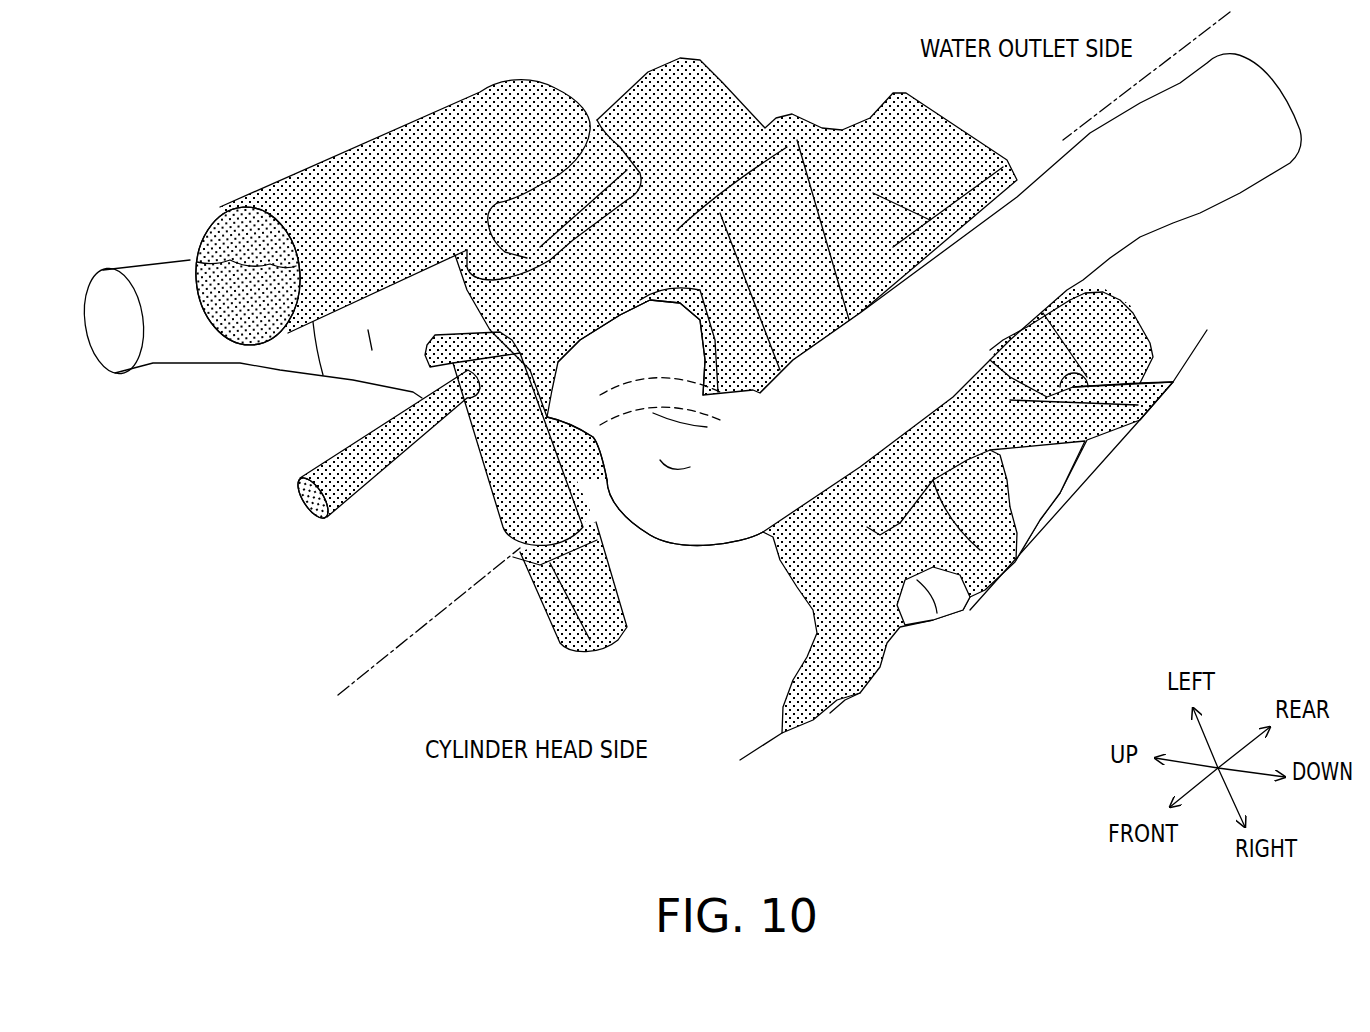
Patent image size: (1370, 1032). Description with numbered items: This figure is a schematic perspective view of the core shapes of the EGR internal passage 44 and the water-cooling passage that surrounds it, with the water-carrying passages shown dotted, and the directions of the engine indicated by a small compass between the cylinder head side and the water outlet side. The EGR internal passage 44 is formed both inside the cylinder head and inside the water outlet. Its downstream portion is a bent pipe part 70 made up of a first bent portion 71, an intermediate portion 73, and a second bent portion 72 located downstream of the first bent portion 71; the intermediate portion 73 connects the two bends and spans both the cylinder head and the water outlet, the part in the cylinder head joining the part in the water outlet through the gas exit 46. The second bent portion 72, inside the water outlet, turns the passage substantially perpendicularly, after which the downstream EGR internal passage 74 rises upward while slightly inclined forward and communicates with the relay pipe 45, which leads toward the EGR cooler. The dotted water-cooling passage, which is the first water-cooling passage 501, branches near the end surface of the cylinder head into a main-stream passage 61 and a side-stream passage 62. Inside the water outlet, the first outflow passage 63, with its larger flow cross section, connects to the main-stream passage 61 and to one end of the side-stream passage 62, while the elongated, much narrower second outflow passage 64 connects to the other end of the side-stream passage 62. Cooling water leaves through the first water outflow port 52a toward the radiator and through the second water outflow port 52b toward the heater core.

The EGR internal passage 44 is at (1232, 180).
The relay pipe 45 is at (156, 350).
The gas exit 46 is at (700, 465).
The first water outflow port 52a is at (292, 193).
The second water outflow port 52b is at (348, 492).
The main-stream passage 61 is at (1005, 400).
The side-stream passage 62 is at (577, 467).
The first outflow passage 63 is at (738, 135).
The second outflow passage 64 is at (490, 462).
The bent pipe part 70 is at (740, 568).
The first bent portion 71 is at (698, 527).
The second bent portion 72 is at (655, 358).
The intermediate portion 73 is at (720, 412).
The downstream EGR internal passage 74 is at (377, 357).
The first water-cooling passage 501 is at (863, 560).